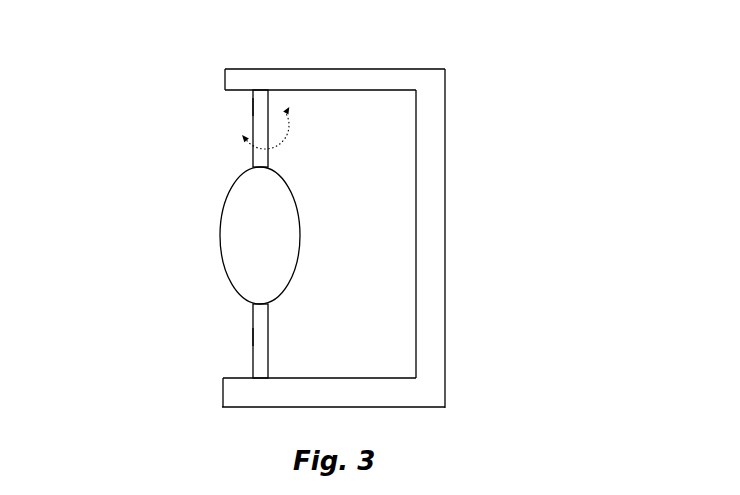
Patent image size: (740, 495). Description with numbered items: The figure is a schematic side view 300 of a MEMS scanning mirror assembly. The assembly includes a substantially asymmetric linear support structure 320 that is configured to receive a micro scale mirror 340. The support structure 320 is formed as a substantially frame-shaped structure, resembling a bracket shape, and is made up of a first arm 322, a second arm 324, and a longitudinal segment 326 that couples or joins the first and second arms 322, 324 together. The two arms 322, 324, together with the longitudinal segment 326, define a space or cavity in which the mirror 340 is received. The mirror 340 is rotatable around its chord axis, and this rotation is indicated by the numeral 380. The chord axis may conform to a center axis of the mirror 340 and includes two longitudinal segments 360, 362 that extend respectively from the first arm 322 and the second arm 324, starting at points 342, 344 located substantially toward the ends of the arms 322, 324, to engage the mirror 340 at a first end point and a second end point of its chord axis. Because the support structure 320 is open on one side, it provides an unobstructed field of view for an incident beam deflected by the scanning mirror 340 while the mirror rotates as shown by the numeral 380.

The side view 300 is at (566, 79).
The asymmetric linear support structure 320 is at (445, 227).
The first arm 322 is at (362, 69).
The second arm 324 is at (383, 395).
The longitudinal segment 326 is at (430, 322).
The micro scale mirror 340 is at (288, 183).
The point 342 is at (258, 89).
The point 344 is at (256, 379).
The longitudinal segment 360 is at (253, 107).
The longitudinal segment 362 is at (255, 337).
The rotation of the mirror 380 is at (238, 143).